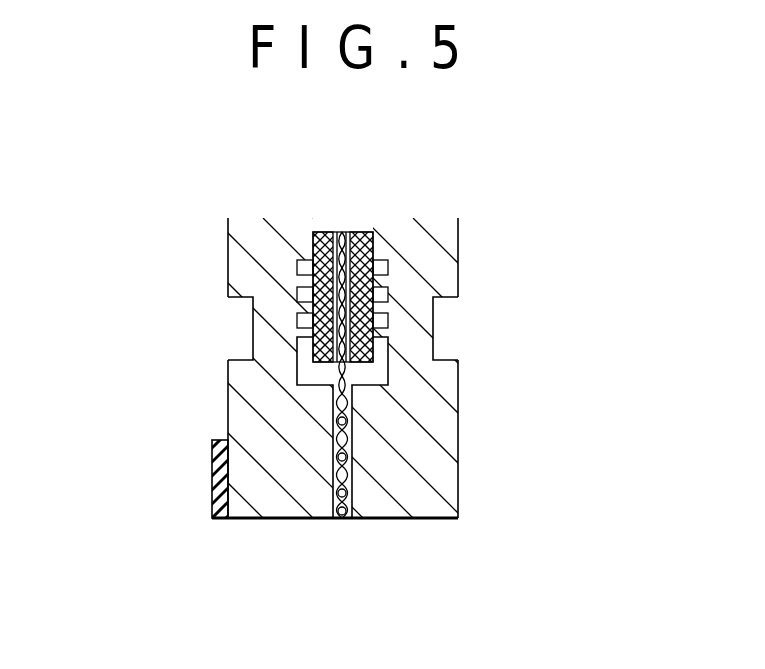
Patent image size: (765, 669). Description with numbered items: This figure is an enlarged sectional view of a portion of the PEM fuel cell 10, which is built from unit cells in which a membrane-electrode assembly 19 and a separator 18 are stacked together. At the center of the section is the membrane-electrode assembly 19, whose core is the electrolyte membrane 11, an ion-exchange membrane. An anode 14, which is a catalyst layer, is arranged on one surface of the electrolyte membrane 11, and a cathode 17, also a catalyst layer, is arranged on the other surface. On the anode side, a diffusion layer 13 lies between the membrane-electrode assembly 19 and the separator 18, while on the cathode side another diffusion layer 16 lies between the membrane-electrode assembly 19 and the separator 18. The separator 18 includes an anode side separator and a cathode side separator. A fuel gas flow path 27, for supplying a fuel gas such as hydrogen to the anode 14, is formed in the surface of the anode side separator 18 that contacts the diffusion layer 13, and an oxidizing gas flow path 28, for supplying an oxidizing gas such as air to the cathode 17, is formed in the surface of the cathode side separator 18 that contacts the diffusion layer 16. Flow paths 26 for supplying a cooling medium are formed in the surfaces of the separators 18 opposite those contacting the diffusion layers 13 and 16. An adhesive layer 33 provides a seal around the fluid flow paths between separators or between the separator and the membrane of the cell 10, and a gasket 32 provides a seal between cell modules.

The PEM fuel cell 10 is at (458, 533).
The electrolyte membrane 11 is at (343, 232).
The diffusion layer 13 is at (297, 288).
The anode 14 is at (336, 232).
The diffusion layer 16 is at (388, 291).
The cathode 17 is at (350, 232).
The separator 18 is at (290, 404).
The membrane-electrode assembly 19 is at (292, 153).
The cooling medium flow path 26 is at (253, 330).
The fuel gas flow path 27 is at (297, 267).
The oxidizing gas flow path 28 is at (388, 267).
The gasket 32 is at (212, 483).
The adhesive layer 33 is at (352, 437).